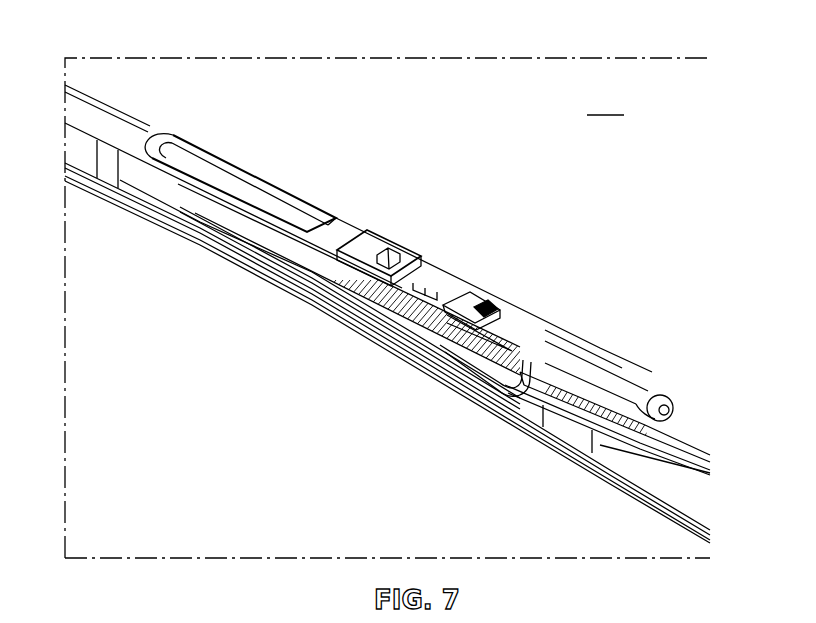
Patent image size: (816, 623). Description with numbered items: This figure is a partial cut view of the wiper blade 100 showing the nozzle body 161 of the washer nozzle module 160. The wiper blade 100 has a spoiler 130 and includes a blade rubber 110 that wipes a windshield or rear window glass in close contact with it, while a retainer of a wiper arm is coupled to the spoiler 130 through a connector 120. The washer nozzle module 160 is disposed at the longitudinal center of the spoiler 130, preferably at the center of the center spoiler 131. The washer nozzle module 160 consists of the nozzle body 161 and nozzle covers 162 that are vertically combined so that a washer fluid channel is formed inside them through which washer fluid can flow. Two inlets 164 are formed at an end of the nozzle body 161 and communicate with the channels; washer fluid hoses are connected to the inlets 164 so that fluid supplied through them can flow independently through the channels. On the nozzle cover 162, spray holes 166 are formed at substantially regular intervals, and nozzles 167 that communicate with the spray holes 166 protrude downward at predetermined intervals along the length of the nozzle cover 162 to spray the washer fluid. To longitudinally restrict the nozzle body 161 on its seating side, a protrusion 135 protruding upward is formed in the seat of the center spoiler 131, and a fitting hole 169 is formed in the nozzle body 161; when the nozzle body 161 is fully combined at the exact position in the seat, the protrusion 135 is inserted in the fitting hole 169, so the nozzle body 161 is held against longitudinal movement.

The wiper blade 100 is at (605, 104).
The blade rubber 110 is at (122, 193).
The connector 120 is at (408, 267).
The spoiler 130 is at (134, 70).
The center spoiler 131 is at (100, 115).
The protrusion 135 is at (493, 312).
The washer nozzle module 160 is at (275, 173).
The nozzle body 161 is at (357, 280).
The nozzle cover 162 is at (258, 250).
The inlet 164 is at (630, 384).
The spray hole 166 is at (478, 357).
The nozzle 167 is at (210, 235).
The fitting hole 169 is at (507, 307).